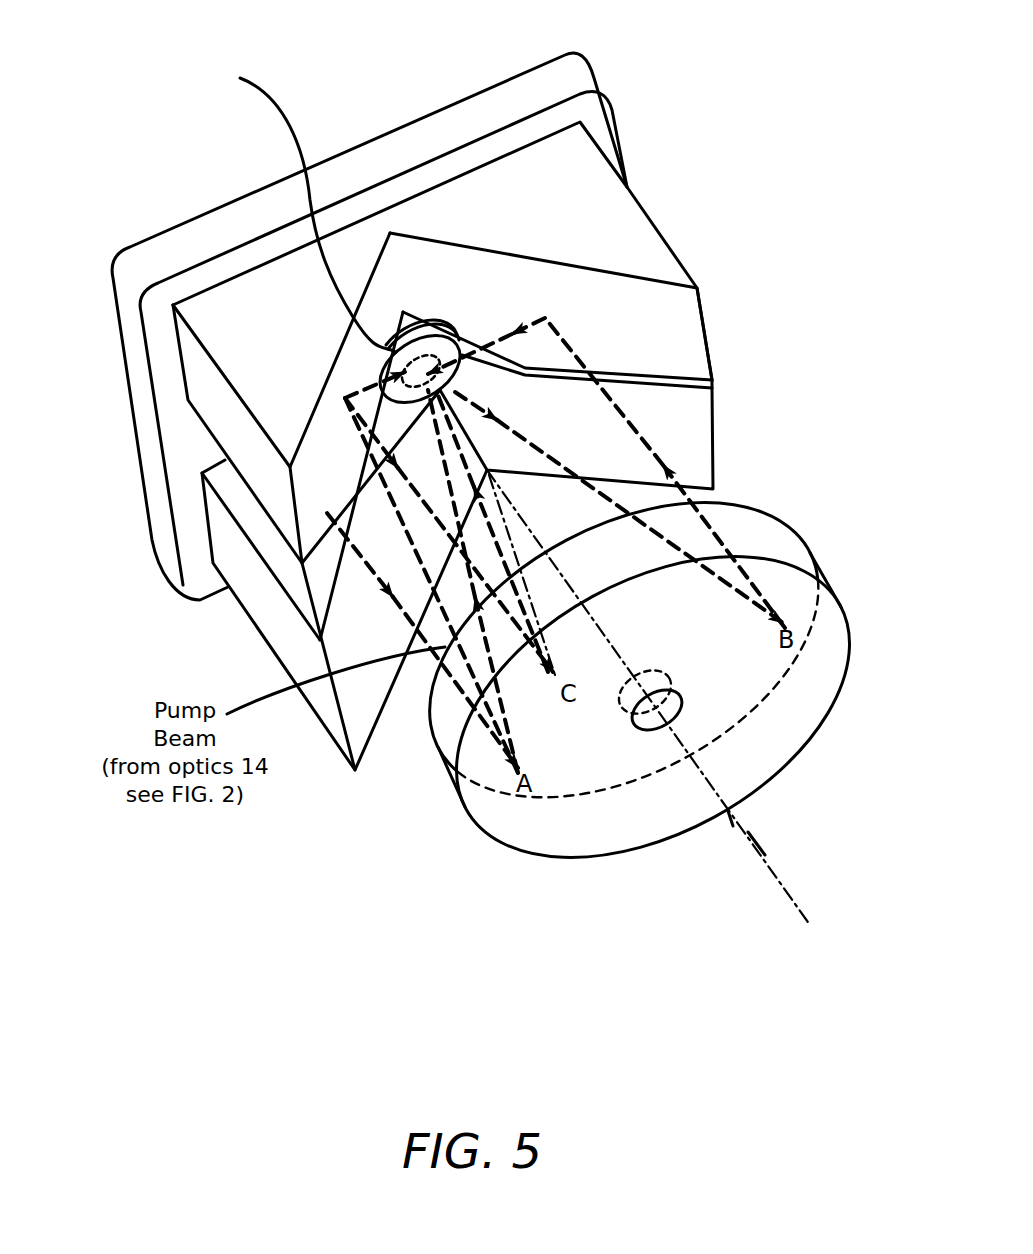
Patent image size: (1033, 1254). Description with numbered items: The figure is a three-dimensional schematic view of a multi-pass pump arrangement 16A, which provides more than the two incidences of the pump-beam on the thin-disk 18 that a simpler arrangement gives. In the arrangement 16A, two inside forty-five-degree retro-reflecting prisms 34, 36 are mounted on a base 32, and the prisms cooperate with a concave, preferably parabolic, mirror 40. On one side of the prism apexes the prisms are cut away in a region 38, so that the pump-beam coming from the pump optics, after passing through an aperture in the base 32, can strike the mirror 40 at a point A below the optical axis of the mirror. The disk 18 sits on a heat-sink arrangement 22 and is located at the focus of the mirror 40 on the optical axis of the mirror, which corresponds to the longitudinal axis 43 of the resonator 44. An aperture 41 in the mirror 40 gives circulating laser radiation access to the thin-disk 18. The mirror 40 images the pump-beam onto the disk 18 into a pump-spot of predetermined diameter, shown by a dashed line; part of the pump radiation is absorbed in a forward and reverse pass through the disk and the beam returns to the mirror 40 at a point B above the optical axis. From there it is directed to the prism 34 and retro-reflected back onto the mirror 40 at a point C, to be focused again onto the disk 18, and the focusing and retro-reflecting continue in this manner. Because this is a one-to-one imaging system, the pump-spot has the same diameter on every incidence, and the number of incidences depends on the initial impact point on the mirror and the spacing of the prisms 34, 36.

The multi-pass pump arrangement 16A is at (451, 525).
The thin-disk 18 is at (438, 333).
The heat-sink arrangement 22 is at (413, 322).
The base 32 is at (235, 220).
The retro-reflecting prism 34 is at (627, 270).
The retro-reflecting prism 36 is at (378, 740).
The cut-away region 38 is at (258, 520).
The concave mirror 40 is at (653, 671).
The aperture 41 is at (668, 707).
The longitudinal axis 43 is at (733, 818).
The resonator 44 is at (762, 839).